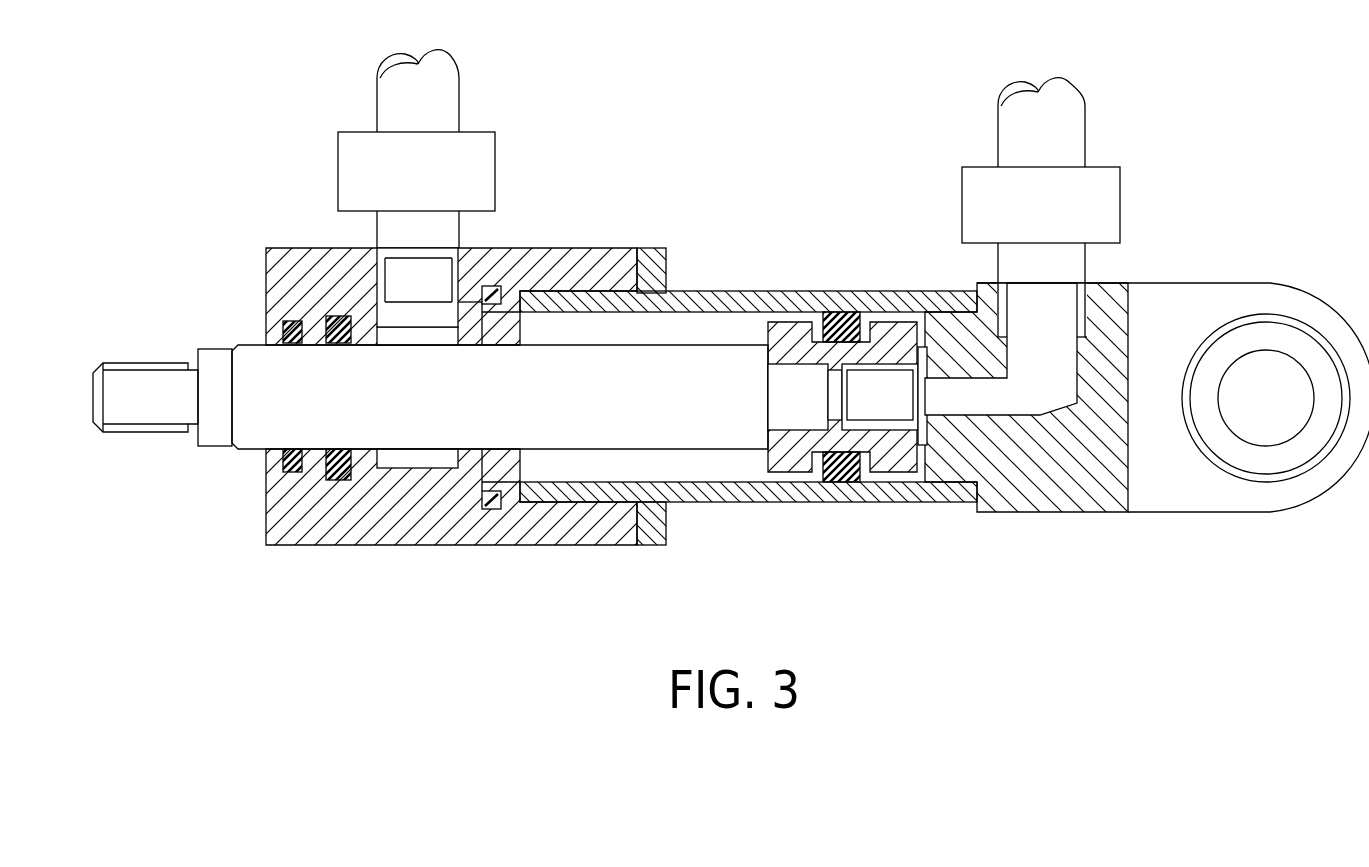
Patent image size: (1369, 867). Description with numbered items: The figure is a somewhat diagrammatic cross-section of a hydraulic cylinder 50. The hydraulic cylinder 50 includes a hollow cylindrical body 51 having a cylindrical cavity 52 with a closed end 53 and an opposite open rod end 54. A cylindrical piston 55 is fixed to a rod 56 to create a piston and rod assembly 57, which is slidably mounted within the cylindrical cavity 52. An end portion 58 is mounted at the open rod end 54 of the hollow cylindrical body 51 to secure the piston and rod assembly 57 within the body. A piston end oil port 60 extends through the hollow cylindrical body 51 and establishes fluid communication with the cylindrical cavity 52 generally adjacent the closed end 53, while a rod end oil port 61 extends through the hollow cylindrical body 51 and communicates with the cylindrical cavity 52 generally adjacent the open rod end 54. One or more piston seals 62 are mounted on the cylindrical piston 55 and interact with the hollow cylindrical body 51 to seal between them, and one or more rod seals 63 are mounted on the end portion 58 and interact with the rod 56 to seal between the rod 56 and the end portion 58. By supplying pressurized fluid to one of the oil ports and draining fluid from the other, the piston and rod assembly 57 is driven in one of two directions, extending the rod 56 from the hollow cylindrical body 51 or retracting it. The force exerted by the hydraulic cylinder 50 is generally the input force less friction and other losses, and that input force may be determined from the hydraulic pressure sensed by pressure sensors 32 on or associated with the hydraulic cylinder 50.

The pressure sensors 32 is at (495, 158).
The hydraulic cylinder 50 is at (1236, 245).
The hollow cylindrical body 51 is at (792, 291).
The cylindrical cavity 52 is at (703, 310).
The closed end 53 is at (903, 291).
The open rod end 54 is at (482, 330).
The cylindrical piston 55 is at (782, 462).
The rod 56 is at (531, 410).
The piston and rod assembly 57 is at (710, 468).
The end portion 58 is at (400, 520).
The piston end oil port 60 is at (1018, 380).
The rod end oil port 61 is at (394, 292).
The piston seals 62 is at (837, 312).
The rod seals 63 is at (338, 315).